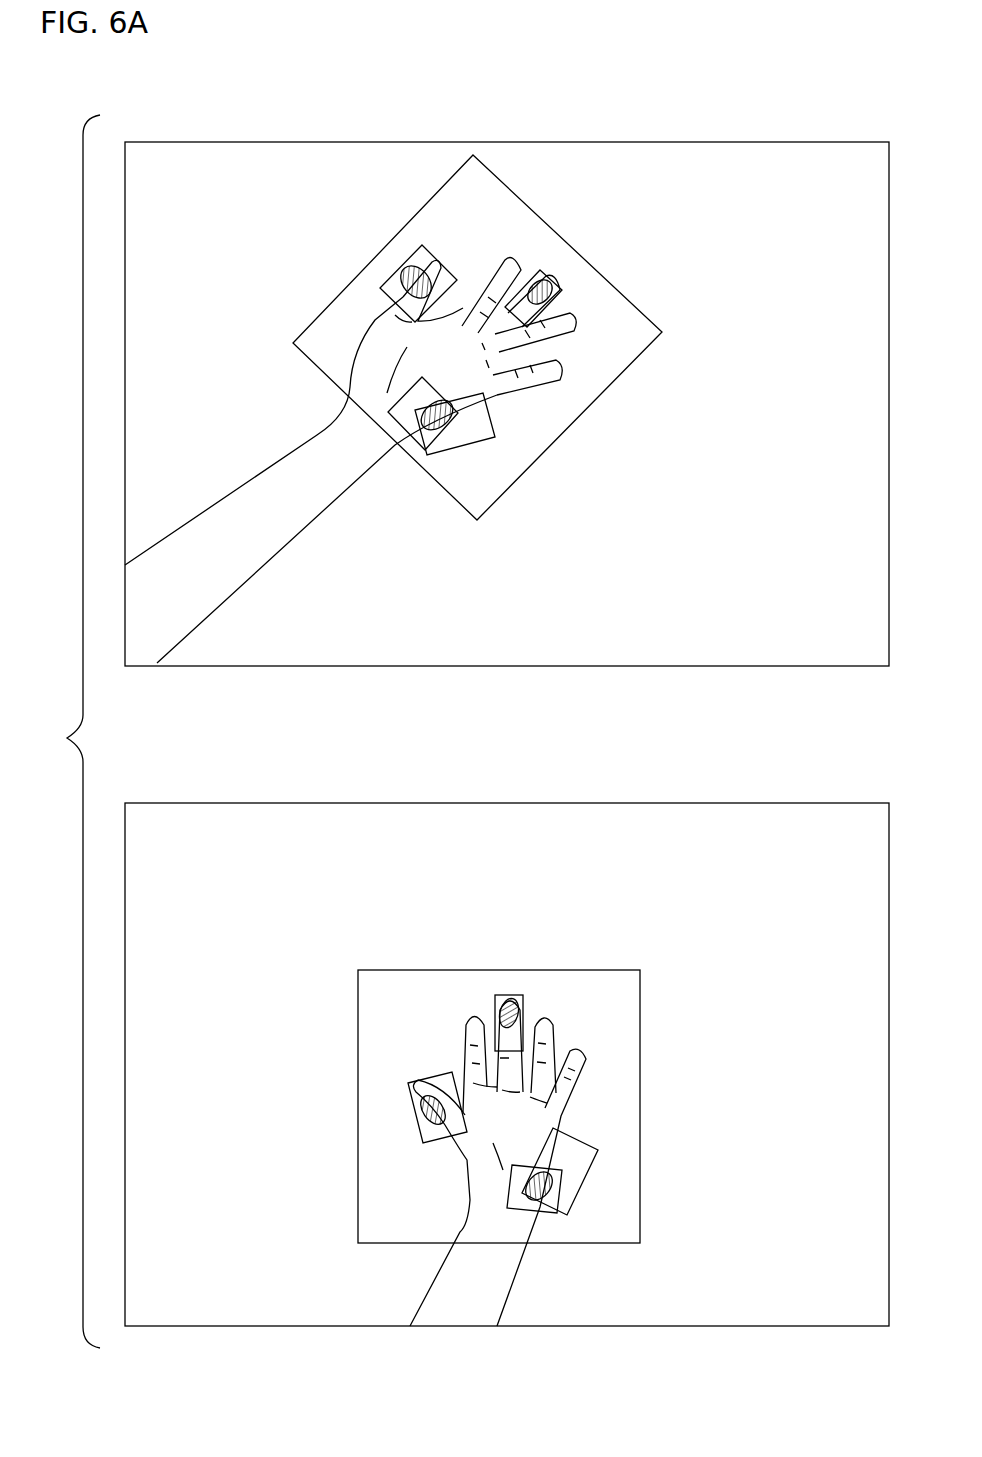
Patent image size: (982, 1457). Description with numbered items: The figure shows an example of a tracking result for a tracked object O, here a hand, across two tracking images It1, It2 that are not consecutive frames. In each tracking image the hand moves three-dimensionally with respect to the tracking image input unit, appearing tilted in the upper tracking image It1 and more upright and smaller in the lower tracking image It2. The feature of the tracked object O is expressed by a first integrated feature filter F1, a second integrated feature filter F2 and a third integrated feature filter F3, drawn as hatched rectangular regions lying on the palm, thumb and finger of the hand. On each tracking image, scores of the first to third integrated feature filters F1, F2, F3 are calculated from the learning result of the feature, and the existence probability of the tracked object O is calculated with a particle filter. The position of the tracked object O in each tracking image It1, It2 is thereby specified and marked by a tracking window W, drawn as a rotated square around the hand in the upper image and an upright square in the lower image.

The tracking image It1 is at (763, 141).
The tracking image It2 is at (758, 803).
The tracking window W is at (423, 203).
The tracked object O is at (453, 340).
The first integrated feature filter F1 is at (447, 470).
The second integrated feature filter F2 is at (385, 265).
The third integrated feature filter F3 is at (578, 268).